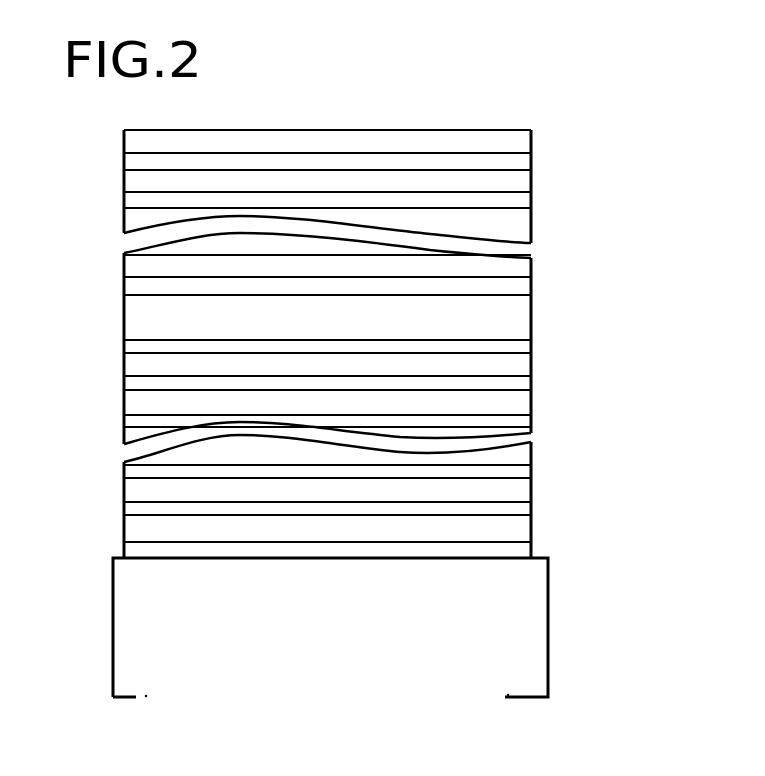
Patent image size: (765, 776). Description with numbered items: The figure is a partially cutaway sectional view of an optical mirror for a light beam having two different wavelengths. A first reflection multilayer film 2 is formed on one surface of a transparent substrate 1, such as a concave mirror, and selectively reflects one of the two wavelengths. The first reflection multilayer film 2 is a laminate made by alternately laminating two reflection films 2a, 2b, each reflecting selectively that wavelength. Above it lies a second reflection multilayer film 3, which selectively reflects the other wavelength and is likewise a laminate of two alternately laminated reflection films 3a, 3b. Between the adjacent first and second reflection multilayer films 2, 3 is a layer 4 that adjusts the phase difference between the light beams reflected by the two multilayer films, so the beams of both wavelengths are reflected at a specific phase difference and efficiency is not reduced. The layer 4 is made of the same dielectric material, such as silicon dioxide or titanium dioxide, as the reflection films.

The transparent substrate 1 is at (530, 633).
The first reflection multilayer film 2 is at (118, 340).
The reflection film 2a is at (520, 350).
The reflection film 2b is at (523, 403).
The second reflection multilayer film 3 is at (118, 131).
The reflection film 3a is at (523, 163).
The reflection film 3b is at (522, 145).
The layer 4 is at (519, 318).